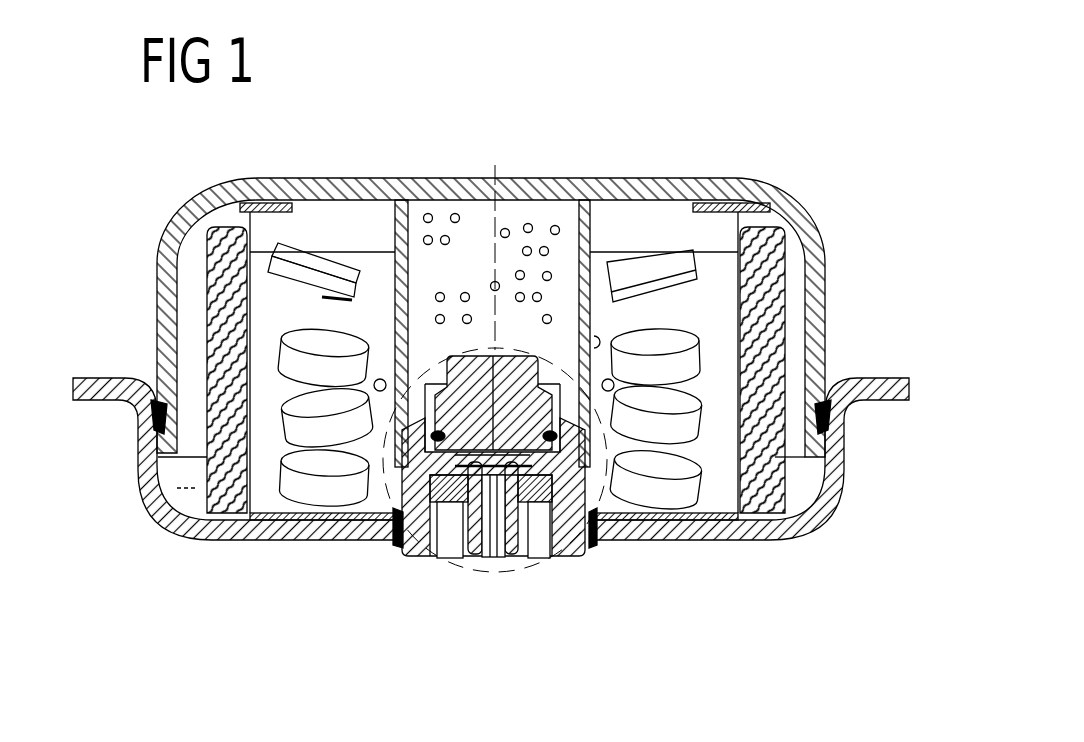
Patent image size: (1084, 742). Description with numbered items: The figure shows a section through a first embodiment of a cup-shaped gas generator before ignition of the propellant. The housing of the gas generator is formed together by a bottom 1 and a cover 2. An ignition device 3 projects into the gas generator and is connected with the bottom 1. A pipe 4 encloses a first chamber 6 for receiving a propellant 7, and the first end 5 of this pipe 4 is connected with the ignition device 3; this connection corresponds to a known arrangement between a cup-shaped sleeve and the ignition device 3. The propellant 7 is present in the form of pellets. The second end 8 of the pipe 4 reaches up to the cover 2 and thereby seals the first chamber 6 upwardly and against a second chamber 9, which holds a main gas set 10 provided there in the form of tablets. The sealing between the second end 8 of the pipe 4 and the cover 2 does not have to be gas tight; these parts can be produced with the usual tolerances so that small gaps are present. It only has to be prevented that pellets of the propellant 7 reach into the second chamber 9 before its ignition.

The bottom 1 is at (819, 500).
The cover 2 is at (820, 288).
The ignition device 3 is at (520, 425).
The pipe 4 is at (602, 222).
The first end 5 is at (607, 495).
The first chamber 6 is at (541, 215).
The propellant 7 is at (444, 236).
The second end 8 is at (587, 245).
The second chamber 9 is at (717, 262).
The main gas set 10 is at (664, 407).